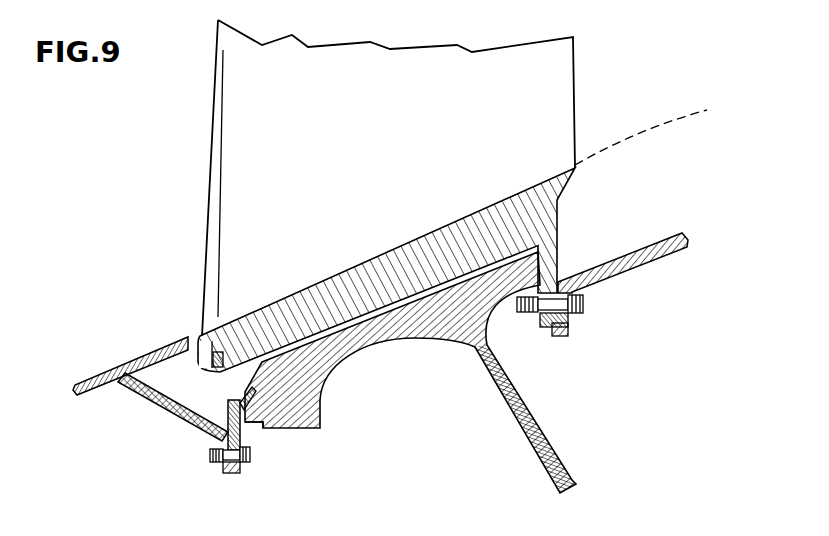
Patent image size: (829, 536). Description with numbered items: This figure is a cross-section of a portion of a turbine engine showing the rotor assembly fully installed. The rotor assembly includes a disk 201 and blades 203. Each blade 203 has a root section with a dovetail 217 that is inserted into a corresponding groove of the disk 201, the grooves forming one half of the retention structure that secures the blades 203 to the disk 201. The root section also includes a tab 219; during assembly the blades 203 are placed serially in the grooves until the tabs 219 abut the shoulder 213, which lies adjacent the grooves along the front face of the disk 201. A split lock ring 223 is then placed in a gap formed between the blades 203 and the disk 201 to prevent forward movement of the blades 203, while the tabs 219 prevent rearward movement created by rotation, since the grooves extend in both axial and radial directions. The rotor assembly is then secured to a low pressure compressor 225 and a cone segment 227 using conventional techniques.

The disk 201 is at (322, 381).
The blade 203 is at (409, 134).
The shoulder 213 is at (250, 415).
The dovetail 217 is at (557, 233).
The tab 219 is at (232, 385).
The split lock ring 223 is at (222, 369).
The low pressure compressor 225 is at (640, 247).
The cone segment 227 is at (135, 362).